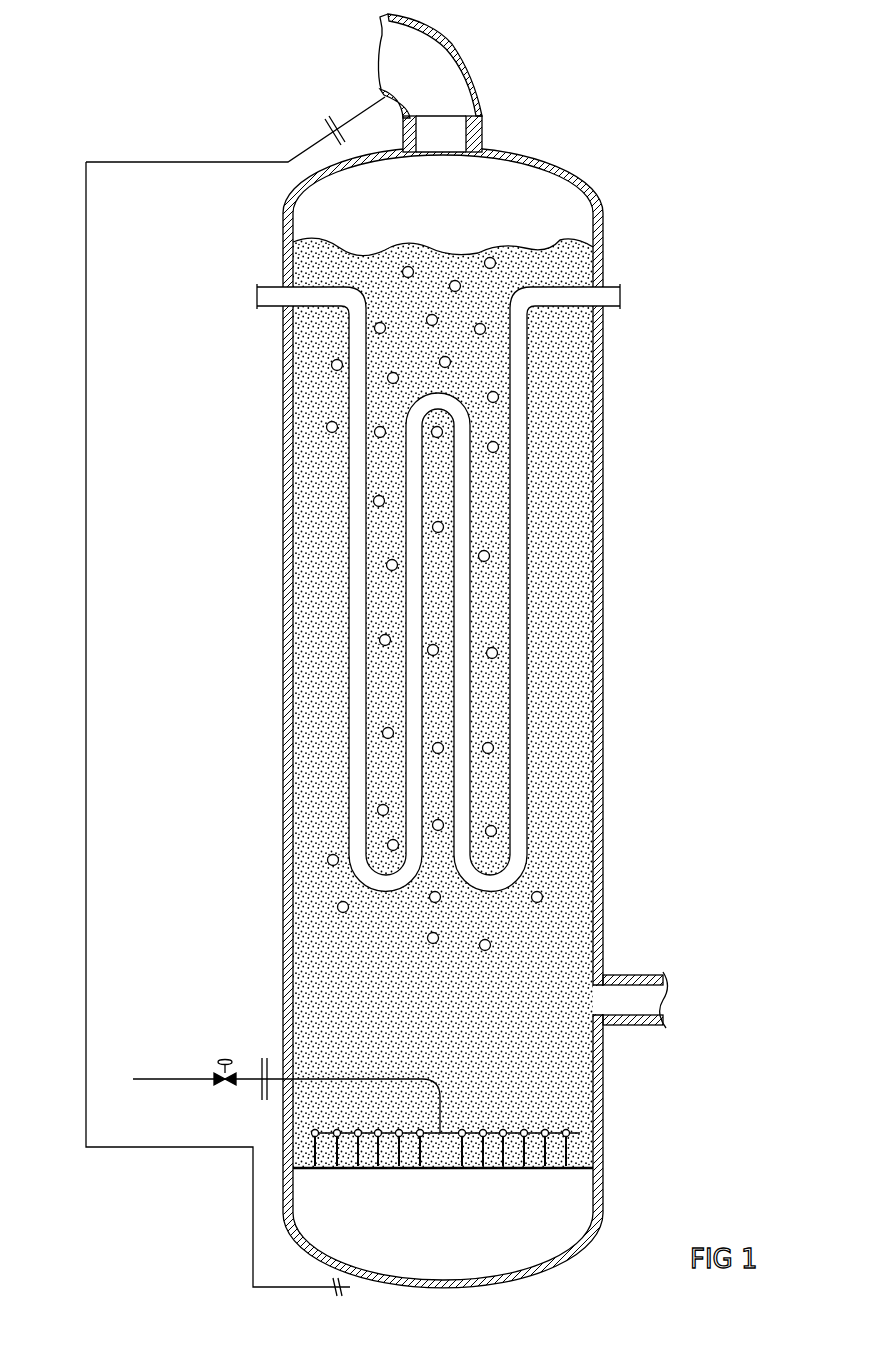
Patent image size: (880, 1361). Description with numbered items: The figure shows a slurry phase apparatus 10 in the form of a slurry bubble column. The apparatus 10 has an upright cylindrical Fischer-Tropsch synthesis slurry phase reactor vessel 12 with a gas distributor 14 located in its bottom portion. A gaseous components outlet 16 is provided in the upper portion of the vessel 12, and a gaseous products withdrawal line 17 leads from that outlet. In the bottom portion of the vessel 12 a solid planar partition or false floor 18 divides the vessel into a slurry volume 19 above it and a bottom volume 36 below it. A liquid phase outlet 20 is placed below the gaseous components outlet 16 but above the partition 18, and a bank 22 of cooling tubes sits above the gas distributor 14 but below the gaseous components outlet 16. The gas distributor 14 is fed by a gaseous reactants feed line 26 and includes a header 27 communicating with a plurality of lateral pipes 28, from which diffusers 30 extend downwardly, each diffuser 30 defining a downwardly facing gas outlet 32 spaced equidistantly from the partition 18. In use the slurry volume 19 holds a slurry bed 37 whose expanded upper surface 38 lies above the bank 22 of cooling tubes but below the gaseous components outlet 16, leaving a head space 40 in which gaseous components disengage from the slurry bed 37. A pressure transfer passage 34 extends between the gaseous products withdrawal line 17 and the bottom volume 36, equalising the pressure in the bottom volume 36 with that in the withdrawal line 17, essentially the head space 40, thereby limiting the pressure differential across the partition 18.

The slurry phase apparatus 10 is at (489, 651).
The slurry phase reactor vessel 12 is at (603, 698).
The gas distributor 14 is at (478, 1112).
The gaseous components outlet 16 is at (460, 111).
The gaseous products withdrawal line 17 is at (462, 50).
The partition 18 is at (560, 1168).
The slurry volume 19 is at (575, 622).
The liquid phase outlet 20 is at (630, 985).
The bank of cooling tubes 22 is at (538, 453).
The gaseous reactants feed line 26 is at (180, 1080).
The header 27 is at (578, 1132).
The lateral pipes 28 is at (316, 1131).
The diffusers 30 is at (573, 1148).
The gas outlet 32 is at (378, 1178).
The pressure transfer passage 34 is at (253, 1190).
The bottom volume 36 is at (520, 1247).
The slurry bed 37 is at (322, 957).
The upper surface 38 is at (418, 243).
The head space 40 is at (516, 188).